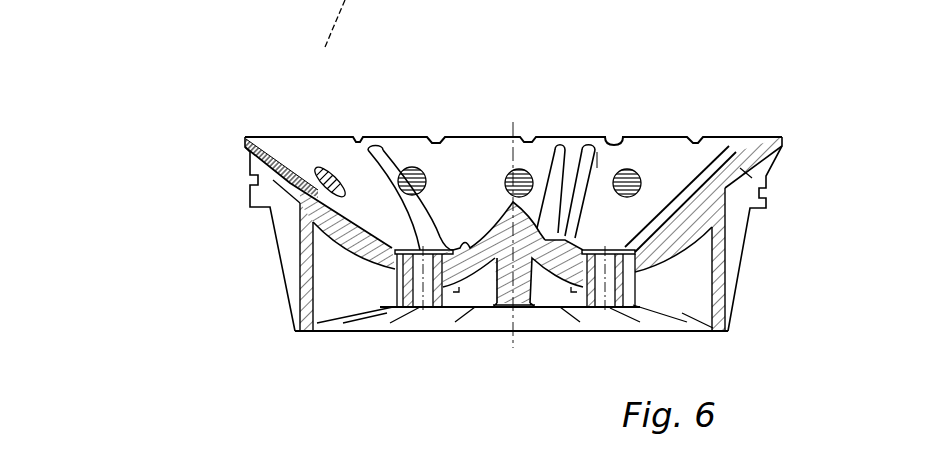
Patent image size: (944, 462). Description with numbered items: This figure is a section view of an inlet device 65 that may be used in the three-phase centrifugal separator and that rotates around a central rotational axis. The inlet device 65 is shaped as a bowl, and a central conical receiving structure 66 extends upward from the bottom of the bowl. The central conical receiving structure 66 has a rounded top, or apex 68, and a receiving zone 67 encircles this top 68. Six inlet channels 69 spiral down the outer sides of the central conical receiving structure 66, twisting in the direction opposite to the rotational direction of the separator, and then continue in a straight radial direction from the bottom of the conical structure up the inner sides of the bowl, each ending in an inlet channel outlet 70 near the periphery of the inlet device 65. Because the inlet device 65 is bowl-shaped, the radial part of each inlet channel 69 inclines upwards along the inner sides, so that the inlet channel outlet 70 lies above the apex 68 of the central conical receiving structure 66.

The inlet device 65 is at (188, 95).
The central conical receiving structure 66 is at (543, 240).
The receiving zone 67 is at (508, 203).
The rounded top (apex) 68 is at (515, 195).
The inlet channels 69 is at (557, 185).
The inlet channel outlet 70 is at (357, 139).